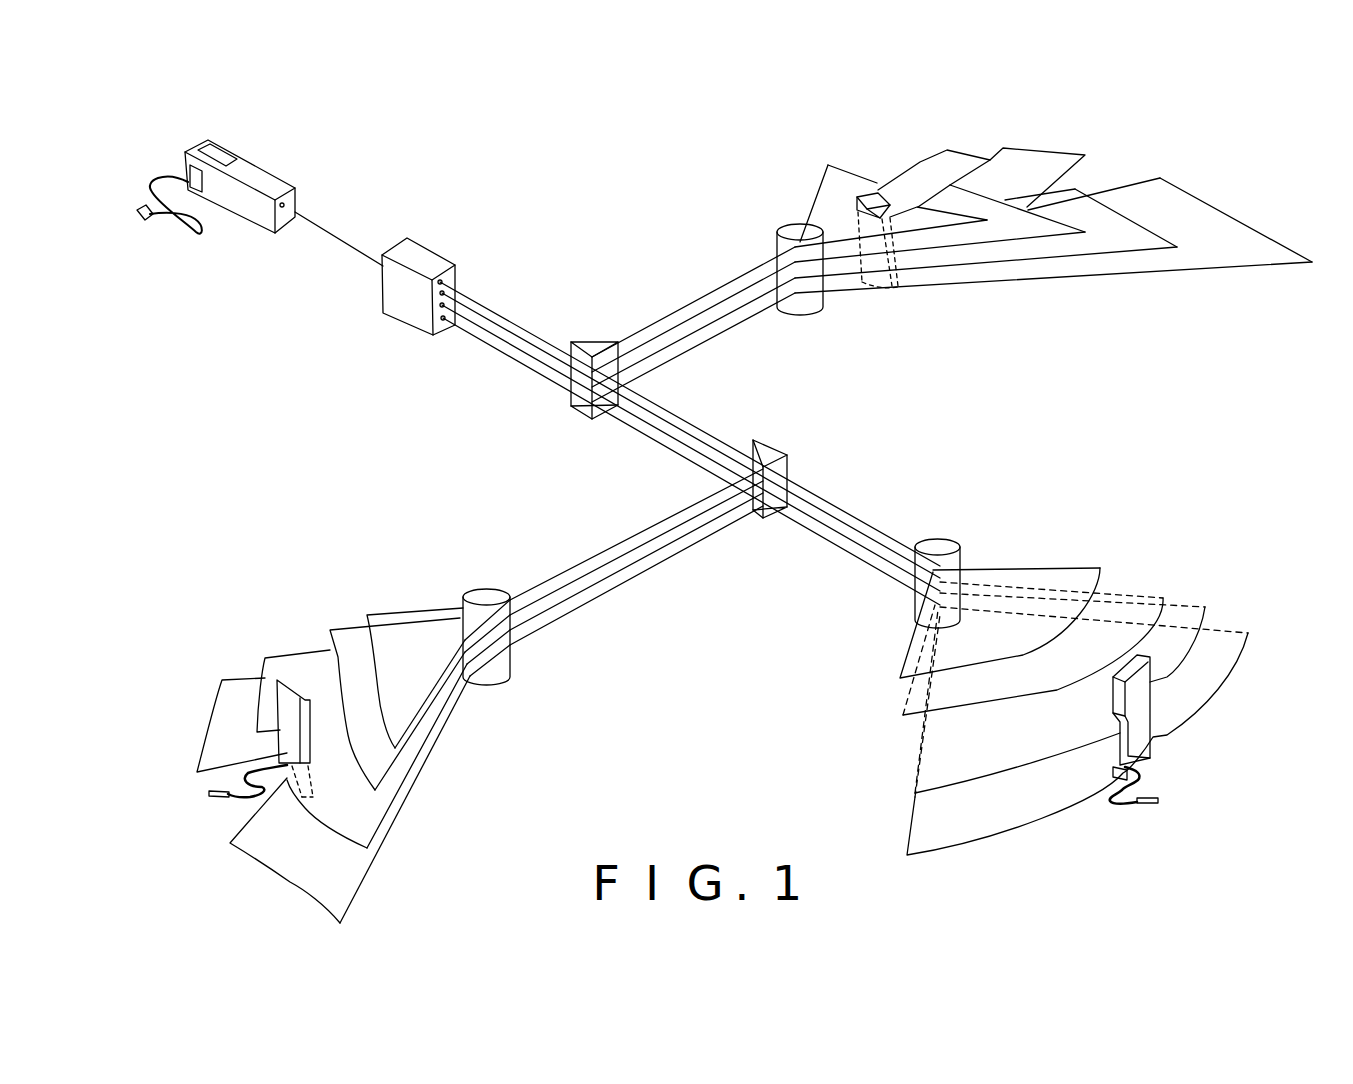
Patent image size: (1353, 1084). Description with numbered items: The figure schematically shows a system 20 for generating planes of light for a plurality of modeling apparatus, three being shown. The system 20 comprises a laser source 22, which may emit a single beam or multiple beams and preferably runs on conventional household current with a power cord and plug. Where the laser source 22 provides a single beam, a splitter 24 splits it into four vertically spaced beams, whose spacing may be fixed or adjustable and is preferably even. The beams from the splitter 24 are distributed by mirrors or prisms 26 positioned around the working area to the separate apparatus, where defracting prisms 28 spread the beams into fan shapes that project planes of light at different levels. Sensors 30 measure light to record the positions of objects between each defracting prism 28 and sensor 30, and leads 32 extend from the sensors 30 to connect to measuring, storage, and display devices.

The system 20 is at (736, 568).
The laser source 22 is at (297, 192).
The splitter 24 is at (423, 262).
The mirrors or prisms 26 is at (592, 342).
The defracting prisms 28 is at (785, 226).
The sensors 30 is at (880, 195).
The leads 32 is at (230, 797).